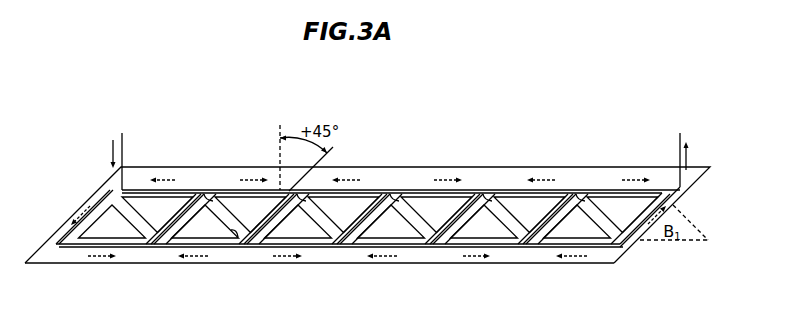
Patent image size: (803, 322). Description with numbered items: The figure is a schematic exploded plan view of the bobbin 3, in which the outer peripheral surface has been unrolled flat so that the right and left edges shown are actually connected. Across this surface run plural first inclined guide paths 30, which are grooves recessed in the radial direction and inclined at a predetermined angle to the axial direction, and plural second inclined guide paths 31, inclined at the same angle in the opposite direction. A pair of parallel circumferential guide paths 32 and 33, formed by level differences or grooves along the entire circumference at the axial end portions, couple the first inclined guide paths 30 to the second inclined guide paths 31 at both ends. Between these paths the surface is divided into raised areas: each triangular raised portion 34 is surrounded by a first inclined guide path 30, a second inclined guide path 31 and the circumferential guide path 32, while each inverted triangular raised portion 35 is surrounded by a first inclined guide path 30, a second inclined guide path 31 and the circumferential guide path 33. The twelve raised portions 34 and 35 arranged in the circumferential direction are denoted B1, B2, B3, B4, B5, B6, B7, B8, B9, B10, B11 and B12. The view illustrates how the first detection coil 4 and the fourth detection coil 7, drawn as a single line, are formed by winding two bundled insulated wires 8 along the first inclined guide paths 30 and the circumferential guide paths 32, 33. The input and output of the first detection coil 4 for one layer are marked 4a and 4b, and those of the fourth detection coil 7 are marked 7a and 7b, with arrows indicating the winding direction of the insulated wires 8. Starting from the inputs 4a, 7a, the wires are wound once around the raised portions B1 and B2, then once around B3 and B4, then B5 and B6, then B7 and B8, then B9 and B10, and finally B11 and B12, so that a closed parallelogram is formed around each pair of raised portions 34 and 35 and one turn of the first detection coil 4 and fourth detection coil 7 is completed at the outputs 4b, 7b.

The bobbin 3 is at (478, 168).
The first detection coil 4 is at (319, 282).
The fourth detection coil 7 is at (504, 252).
The input of the first detection coil 4a is at (81, 176).
The input of the fourth detection coil 7a is at (122, 133).
The output of the first detection coil 4b is at (683, 177).
The output of the fourth detection coil 7b is at (680, 133).
The insulated wire 8 is at (371, 192).
The first inclined guide path 30 is at (494, 194).
The second inclined guide path 31 is at (238, 240).
The circumferential guide path 32 is at (326, 258).
The circumferential guide path 33 is at (424, 172).
The triangular raised portion 34 is at (345, 258).
The inverted triangular raised portion 35 is at (390, 178).
The raised portion B1 is at (112, 221).
The raised portion B2 is at (157, 215).
The raised portion B3 is at (205, 221).
The raised portion B4 is at (250, 215).
The raised portion B5 is at (298, 221).
The raised portion B6 is at (343, 215).
The raised portion B7 is at (391, 221).
The raised portion B8 is at (436, 215).
The raised portion B9 is at (484, 221).
The raised portion B10 is at (529, 215).
The raised portion B11 is at (577, 221).
The raised portion B12 is at (622, 215).